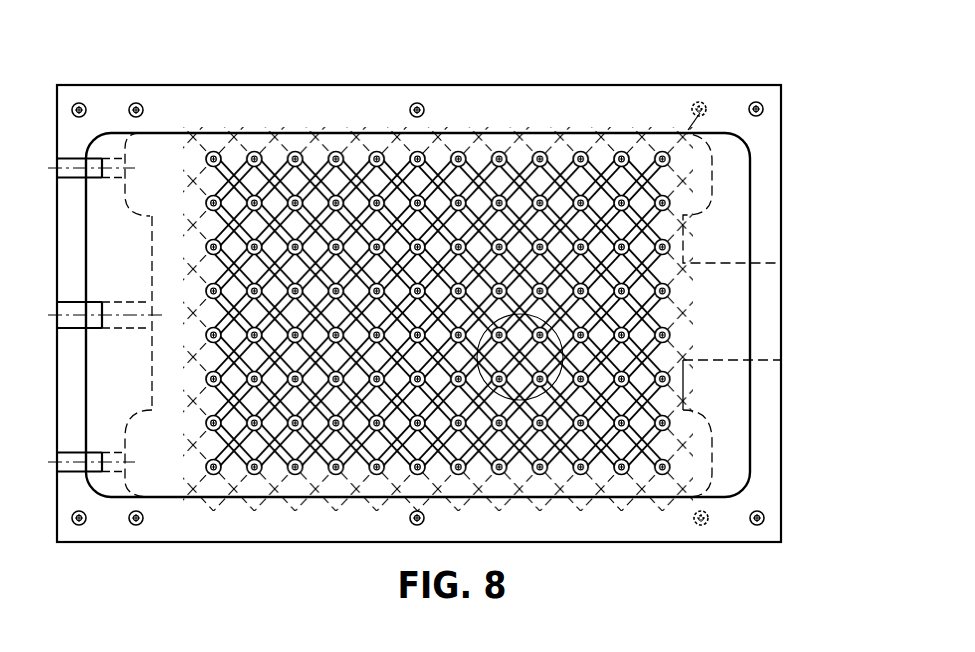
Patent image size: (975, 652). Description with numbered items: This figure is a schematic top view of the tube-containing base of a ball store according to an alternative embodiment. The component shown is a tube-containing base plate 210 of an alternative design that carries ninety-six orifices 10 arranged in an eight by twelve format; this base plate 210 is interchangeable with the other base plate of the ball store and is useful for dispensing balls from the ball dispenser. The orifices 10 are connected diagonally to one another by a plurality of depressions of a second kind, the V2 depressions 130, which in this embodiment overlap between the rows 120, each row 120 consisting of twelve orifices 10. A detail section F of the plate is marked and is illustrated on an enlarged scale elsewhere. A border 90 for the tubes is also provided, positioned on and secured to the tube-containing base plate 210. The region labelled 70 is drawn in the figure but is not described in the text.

The orifices 10 is at (670, 291).
The recess 70 is at (165, 185).
The border 90 is at (734, 107).
The row of orifices 120 is at (660, 155).
The V2 depressions 130 is at (207, 323).
The tube-containing base plate 210 is at (602, 83).
The detail section F is at (653, 277).